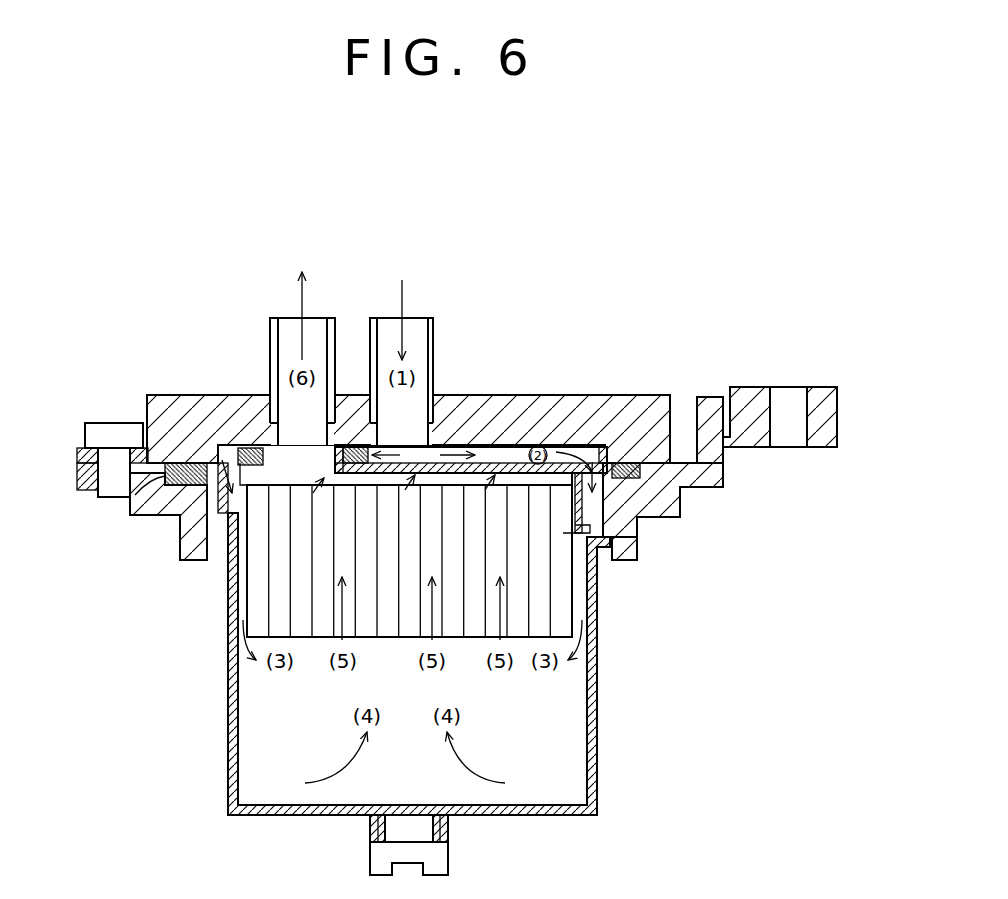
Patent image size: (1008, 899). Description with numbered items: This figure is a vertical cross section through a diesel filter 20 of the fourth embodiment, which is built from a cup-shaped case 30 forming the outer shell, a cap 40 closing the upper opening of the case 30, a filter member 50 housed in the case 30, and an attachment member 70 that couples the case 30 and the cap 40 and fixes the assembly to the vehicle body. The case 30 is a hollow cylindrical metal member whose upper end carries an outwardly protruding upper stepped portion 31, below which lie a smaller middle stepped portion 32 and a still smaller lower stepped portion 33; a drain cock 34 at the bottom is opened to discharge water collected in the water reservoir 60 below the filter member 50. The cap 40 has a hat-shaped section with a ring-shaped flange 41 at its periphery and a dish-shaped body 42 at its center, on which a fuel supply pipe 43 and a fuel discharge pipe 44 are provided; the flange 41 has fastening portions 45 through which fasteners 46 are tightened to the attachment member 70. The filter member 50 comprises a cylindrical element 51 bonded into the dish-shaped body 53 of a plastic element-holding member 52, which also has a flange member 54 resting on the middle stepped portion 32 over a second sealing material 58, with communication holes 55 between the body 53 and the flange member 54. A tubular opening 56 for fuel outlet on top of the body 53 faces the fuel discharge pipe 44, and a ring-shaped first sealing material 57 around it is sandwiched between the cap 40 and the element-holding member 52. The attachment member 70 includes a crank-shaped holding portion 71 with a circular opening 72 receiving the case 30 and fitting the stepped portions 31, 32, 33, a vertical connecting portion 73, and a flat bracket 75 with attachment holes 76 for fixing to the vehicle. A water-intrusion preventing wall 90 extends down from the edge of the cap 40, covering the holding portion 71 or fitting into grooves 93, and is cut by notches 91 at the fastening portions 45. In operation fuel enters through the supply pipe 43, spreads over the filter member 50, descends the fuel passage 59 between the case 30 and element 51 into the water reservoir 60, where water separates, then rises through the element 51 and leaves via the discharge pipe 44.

The diesel filter 20 is at (788, 383).
The case 30 is at (600, 748).
The upper stepped portion 31 is at (80, 468).
The middle stepped portion 32 is at (165, 505).
The lower stepped portion 33 is at (215, 560).
The drain cock 34 is at (440, 860).
The cap 40 is at (208, 395).
The ring-shaped flange 41 is at (683, 440).
The dish-shaped body 42 is at (578, 435).
The fuel supply pipe 43 is at (433, 318).
The fuel discharge pipe 44 is at (272, 318).
The fastening portion 45 is at (78, 452).
The fastener 46 is at (100, 432).
The filter member 50 is at (577, 597).
The element 51 is at (640, 540).
The element-holding member 52 is at (500, 465).
The body 53 is at (430, 470).
The flange member 54 is at (245, 458).
The communication hole 55 is at (178, 466).
The opening for fuel outlet 56 is at (338, 450).
The first sealing material 57 is at (240, 447).
The second sealing material 58 is at (150, 488).
The fuel passage 59 is at (228, 598).
The water reservoir 60 is at (268, 770).
The attachment member 70 is at (832, 455).
The holding portion 71 is at (85, 497).
The circular opening 72 is at (640, 560).
The connecting portion 73 is at (725, 465).
The bracket 75 is at (745, 392).
The attachment hole 76 is at (800, 417).
The water-intrusion preventing wall 90 is at (702, 487).
The notch 91 is at (80, 485).
The groove 93 is at (700, 500).